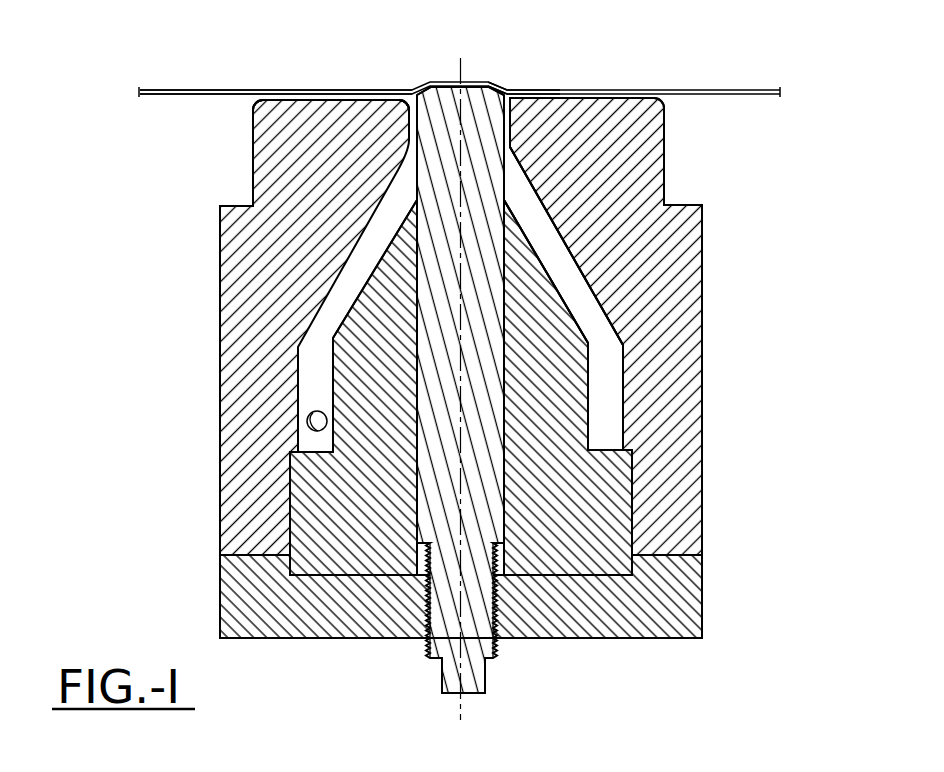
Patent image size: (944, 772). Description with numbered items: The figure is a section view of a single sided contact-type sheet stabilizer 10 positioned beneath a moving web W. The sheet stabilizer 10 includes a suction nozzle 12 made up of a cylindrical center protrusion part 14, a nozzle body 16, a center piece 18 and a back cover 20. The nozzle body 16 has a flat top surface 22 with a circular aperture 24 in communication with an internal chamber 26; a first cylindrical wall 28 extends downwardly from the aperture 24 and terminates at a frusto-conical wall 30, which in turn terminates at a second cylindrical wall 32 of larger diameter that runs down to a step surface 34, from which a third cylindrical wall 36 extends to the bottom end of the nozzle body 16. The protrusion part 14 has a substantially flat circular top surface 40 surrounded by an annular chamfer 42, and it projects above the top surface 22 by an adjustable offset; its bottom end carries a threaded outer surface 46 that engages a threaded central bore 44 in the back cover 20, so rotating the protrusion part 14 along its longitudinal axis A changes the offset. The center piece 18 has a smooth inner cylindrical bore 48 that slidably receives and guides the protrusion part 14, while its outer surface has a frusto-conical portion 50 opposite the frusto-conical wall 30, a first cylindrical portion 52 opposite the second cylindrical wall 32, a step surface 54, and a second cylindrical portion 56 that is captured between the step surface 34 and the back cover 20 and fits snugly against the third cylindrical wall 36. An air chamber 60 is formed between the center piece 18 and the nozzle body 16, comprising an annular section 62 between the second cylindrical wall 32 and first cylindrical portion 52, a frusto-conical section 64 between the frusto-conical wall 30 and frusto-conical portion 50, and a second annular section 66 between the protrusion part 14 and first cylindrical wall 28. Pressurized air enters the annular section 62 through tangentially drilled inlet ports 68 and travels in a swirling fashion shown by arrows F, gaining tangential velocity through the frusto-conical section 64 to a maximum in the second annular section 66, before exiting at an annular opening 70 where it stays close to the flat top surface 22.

The sheet stabilizer 10 is at (104, 98).
The suction nozzle 12 is at (220, 340).
The cylindrical center protrusion part 14 is at (438, 544).
The nozzle body 16 is at (220, 266).
The center piece 18 is at (290, 500).
The back cover 20 is at (668, 597).
The flat top surface 22 is at (307, 98).
The circular aperture 24 is at (510, 97).
The internal chamber 26 is at (621, 325).
The first cylindrical wall 28 is at (518, 108).
The frusto-conical wall 30 is at (592, 275).
The second cylindrical wall 32 is at (629, 418).
The step surface 34 is at (622, 455).
The third cylindrical wall 36 is at (638, 520).
The circular top surface 40 is at (470, 79).
The annular chamfer 42 is at (422, 85).
The threaded central bore 44 is at (430, 631).
The threaded outer surface 46 is at (498, 643).
The smooth inner cylindrical bore 48 is at (421, 222).
The frusto-conical portion 50 is at (543, 245).
The first cylindrical portion 52 is at (334, 378).
The step surface 54 is at (315, 451).
The second cylindrical portion 56 is at (298, 538).
The air chamber 60 is at (583, 248).
The annular section 62 is at (614, 355).
The frusto-conical section 64 is at (600, 300).
The second annular section 66 is at (513, 140).
The inlet ports 68 is at (307, 427).
The annular opening 70 is at (409, 97).
The moving web W is at (690, 90).
The arrows F is at (388, 449).
The longitudinal axis A is at (462, 711).